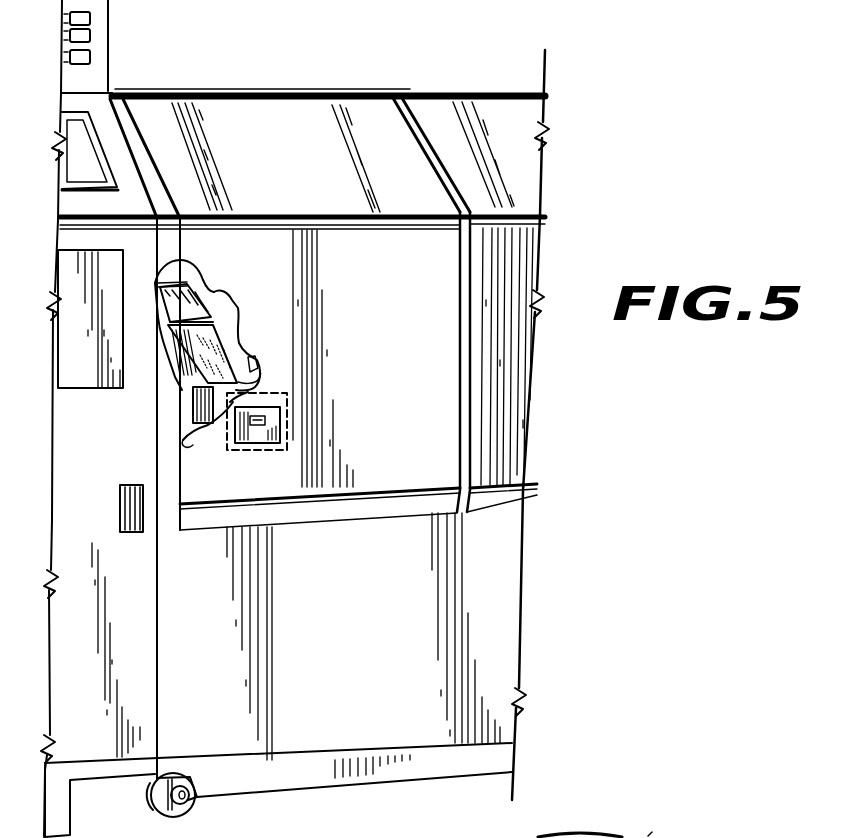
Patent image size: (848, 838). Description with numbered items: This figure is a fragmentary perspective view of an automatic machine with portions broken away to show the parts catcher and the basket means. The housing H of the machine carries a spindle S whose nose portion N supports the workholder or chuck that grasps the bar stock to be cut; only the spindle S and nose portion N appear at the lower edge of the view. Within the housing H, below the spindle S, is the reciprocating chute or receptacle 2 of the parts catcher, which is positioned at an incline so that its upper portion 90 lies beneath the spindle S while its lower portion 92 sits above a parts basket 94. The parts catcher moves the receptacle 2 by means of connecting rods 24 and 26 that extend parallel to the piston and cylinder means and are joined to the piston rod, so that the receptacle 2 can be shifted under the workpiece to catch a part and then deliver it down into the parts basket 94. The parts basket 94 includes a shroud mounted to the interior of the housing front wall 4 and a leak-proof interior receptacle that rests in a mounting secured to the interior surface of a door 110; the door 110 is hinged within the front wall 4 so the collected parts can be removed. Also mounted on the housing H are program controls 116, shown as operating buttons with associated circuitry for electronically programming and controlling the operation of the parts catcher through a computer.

The program controls 116 is at (84, 40).
The housing H is at (301, 93).
The upper portion 90 is at (181, 280).
The connecting rod 26 is at (198, 273).
The receptacle 2 is at (210, 310).
The connecting rod 24 is at (247, 330).
The lower portion 92 is at (258, 368).
The parts basket 94 is at (289, 395).
The door 110 is at (263, 432).
The front wall 4 is at (427, 373).
The spindle S is at (590, 835).
The nose portion N is at (652, 837).